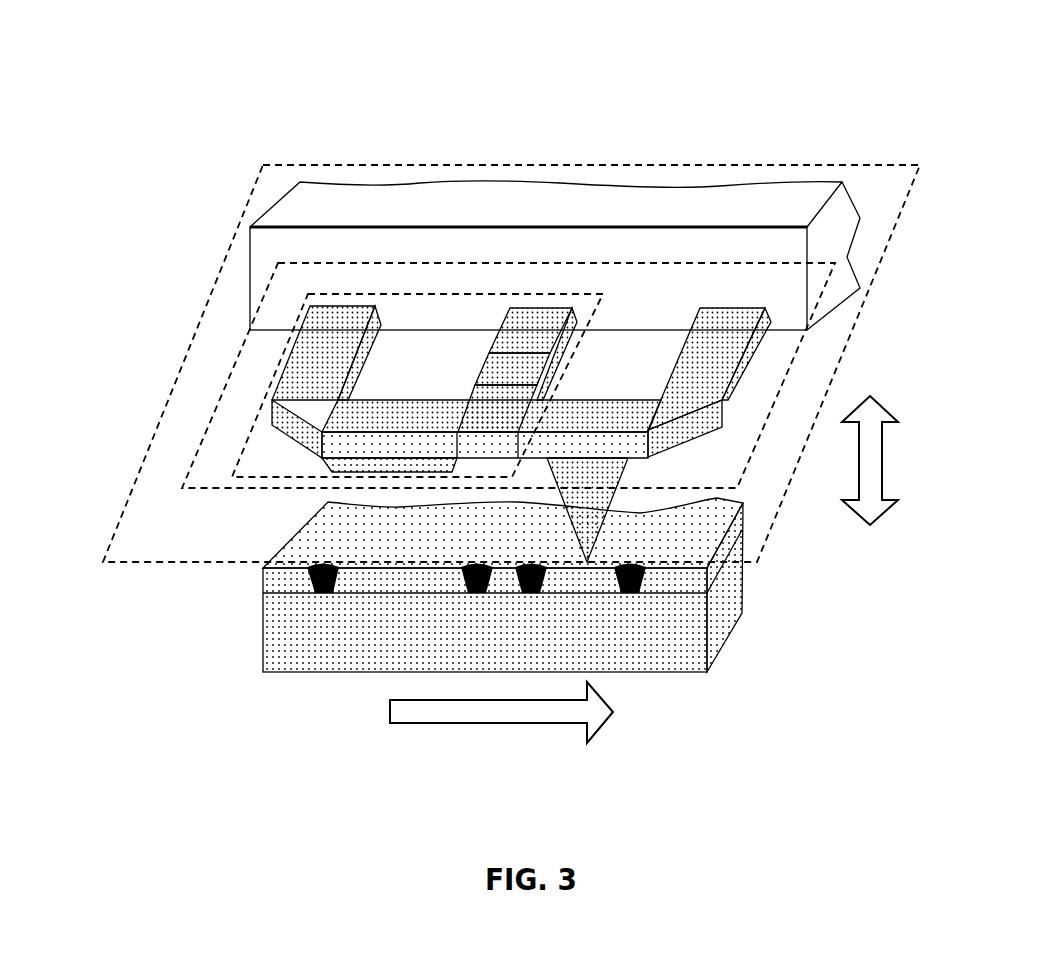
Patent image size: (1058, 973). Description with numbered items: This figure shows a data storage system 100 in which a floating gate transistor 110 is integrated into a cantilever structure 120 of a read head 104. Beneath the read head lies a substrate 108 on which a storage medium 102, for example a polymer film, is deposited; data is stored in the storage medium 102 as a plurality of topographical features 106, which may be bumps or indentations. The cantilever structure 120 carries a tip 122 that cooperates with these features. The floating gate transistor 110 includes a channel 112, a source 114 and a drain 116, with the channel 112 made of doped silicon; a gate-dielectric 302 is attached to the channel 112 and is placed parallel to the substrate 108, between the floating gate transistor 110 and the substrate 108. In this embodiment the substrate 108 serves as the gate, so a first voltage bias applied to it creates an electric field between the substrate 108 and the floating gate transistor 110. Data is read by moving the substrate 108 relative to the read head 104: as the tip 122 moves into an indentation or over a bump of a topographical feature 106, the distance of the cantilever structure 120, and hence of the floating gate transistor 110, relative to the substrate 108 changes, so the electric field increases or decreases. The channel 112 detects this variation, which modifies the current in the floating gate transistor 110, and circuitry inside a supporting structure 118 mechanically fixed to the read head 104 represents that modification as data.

The data storage system 100 is at (368, 62).
The storage medium 102 is at (395, 541).
The read head 104 is at (236, 238).
The topographical feature 106 is at (686, 587).
The substrate 108 is at (282, 638).
The floating gate transistor 110 is at (250, 425).
The channel 112 is at (378, 447).
The source 114 is at (308, 365).
The drain 116 is at (527, 333).
The supporting structure 118 is at (781, 207).
The cantilever structure 120 is at (788, 385).
The tip 122 is at (583, 527).
The gate-dielectric 302 is at (333, 464).